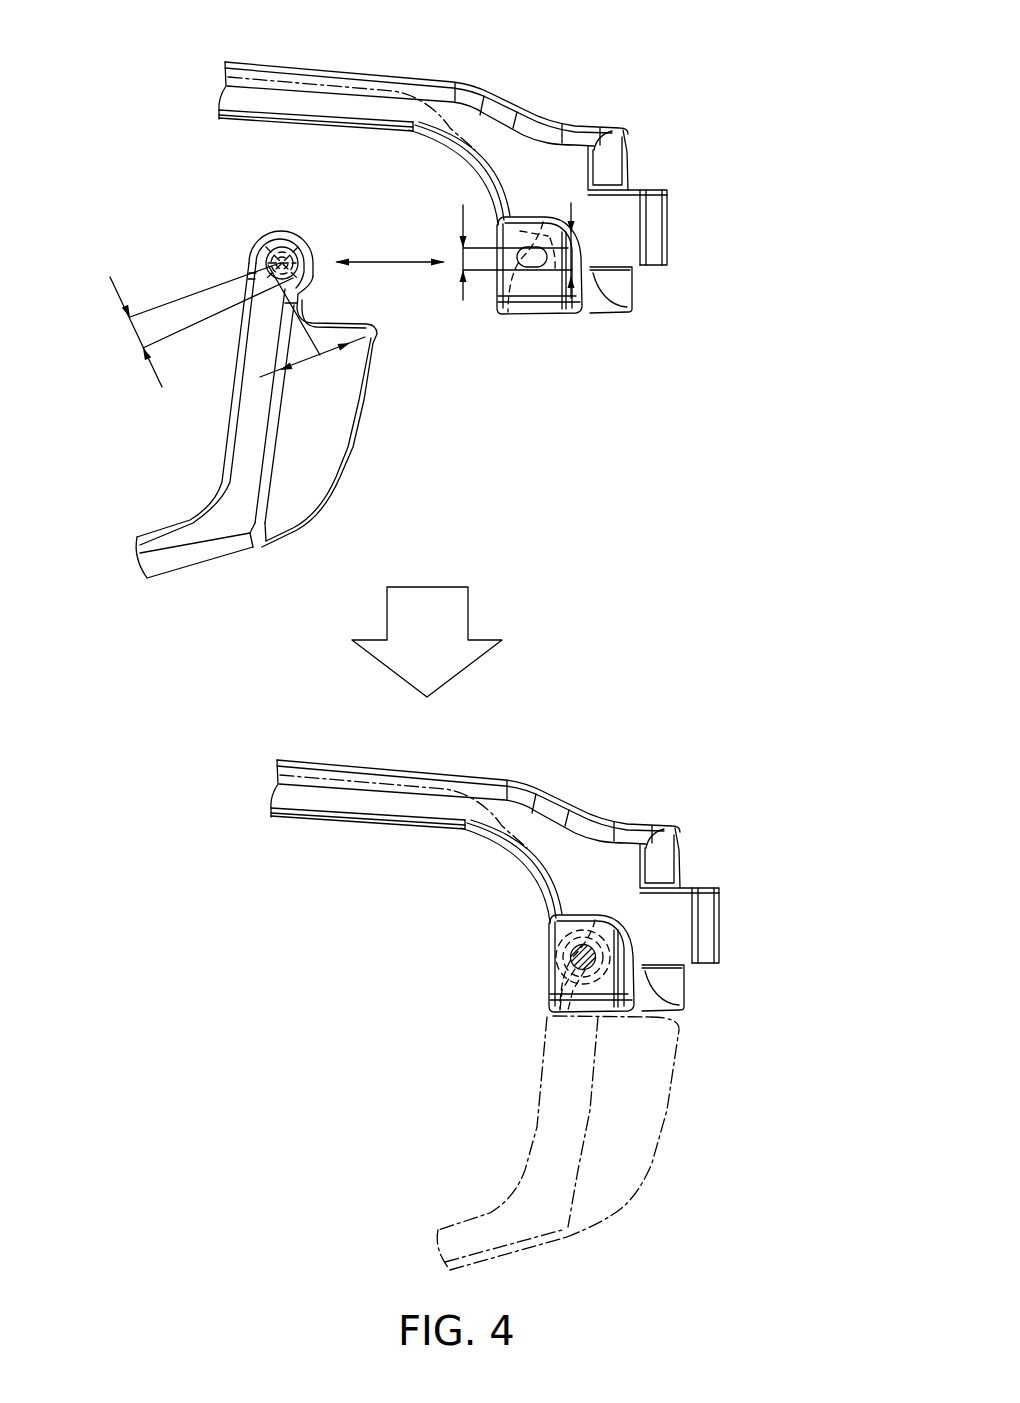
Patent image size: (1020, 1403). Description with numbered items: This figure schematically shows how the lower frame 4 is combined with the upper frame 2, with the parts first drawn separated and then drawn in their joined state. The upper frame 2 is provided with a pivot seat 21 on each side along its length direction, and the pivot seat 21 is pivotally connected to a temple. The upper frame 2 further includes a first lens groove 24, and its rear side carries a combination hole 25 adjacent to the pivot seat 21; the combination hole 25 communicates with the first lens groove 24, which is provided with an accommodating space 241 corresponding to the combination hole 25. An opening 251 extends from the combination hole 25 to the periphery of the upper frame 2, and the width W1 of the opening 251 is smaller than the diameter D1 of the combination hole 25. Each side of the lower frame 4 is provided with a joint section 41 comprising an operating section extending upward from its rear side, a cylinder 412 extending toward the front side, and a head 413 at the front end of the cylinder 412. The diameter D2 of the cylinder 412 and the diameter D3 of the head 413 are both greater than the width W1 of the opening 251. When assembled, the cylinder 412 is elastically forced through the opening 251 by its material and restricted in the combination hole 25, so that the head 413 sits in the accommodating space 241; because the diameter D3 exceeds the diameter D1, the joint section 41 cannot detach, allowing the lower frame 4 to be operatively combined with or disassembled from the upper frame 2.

The upper frame 2 is at (417, 78).
The pivot seat 21 is at (722, 923).
The first lens groove 24 is at (333, 87).
The accommodating space 241 is at (543, 224).
The combination hole 25 is at (532, 270).
The opening 251 is at (523, 262).
The lower frame 4 is at (156, 578).
The joint section 41 is at (248, 260).
The cylinder 412 is at (265, 228).
The head 413 is at (250, 247).
The width of the opening W1 is at (462, 252).
The diameter of the combination hole D1 is at (588, 243).
The diameter of the cylinder D2 is at (316, 356).
The diameter of the head D3 is at (127, 333).